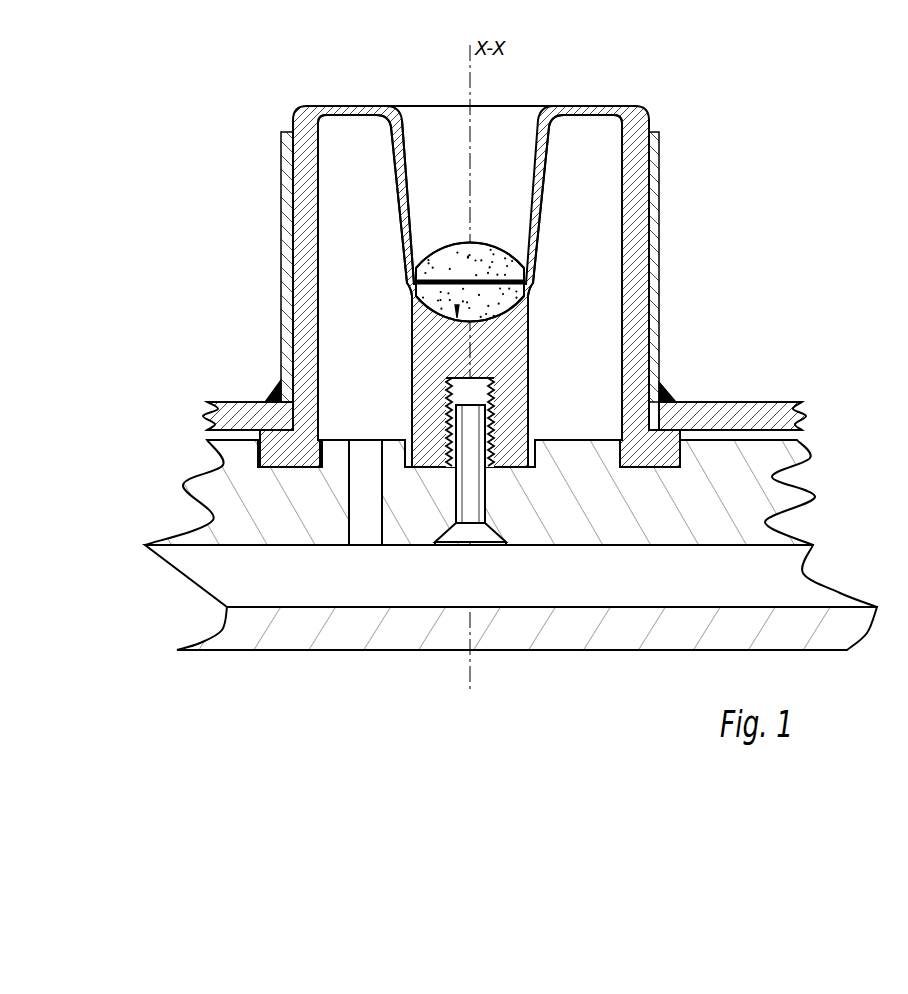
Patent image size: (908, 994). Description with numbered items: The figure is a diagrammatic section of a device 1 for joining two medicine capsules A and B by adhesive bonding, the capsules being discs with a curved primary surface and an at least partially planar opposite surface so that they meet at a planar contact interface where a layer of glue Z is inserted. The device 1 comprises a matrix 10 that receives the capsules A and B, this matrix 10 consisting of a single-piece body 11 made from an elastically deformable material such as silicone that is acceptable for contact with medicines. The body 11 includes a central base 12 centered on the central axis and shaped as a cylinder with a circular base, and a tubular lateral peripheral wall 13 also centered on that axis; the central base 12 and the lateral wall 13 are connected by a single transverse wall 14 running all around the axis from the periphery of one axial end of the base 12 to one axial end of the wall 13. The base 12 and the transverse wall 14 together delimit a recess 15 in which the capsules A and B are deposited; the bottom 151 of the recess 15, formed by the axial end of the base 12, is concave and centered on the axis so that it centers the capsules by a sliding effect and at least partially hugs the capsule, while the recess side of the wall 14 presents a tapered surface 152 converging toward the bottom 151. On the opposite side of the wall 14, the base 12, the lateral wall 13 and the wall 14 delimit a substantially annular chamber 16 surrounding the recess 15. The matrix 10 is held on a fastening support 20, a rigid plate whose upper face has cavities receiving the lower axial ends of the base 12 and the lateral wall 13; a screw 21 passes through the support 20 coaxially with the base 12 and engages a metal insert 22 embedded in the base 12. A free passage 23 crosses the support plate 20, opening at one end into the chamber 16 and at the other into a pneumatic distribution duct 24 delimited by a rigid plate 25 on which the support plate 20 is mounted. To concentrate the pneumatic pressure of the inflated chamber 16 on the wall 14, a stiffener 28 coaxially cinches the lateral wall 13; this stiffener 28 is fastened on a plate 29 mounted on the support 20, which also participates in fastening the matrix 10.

The device 1 is at (272, 125).
The matrix 10 is at (290, 105).
The body 11 is at (131, 185).
The central base 12 is at (435, 342).
The lateral peripheral wall 13 is at (310, 182).
The transverse wall 14 is at (395, 214).
The recess 15 is at (429, 277).
The chamber 16 is at (575, 277).
The bottom of the recess 151 is at (414, 270).
The tapered surface 152 is at (412, 156).
The fastening support 20 is at (178, 481).
The screw 21 is at (480, 533).
The metal insert 22 is at (497, 410).
The free passage 23 is at (370, 525).
The pneumatic distribution duct 24 is at (258, 605).
The rigid plate 25 is at (196, 632).
The stiffener 28 is at (658, 190).
The plate 29 is at (718, 404).
The medicine capsule A is at (512, 318).
The medicine capsule B is at (522, 246).
The glue Z is at (524, 283).